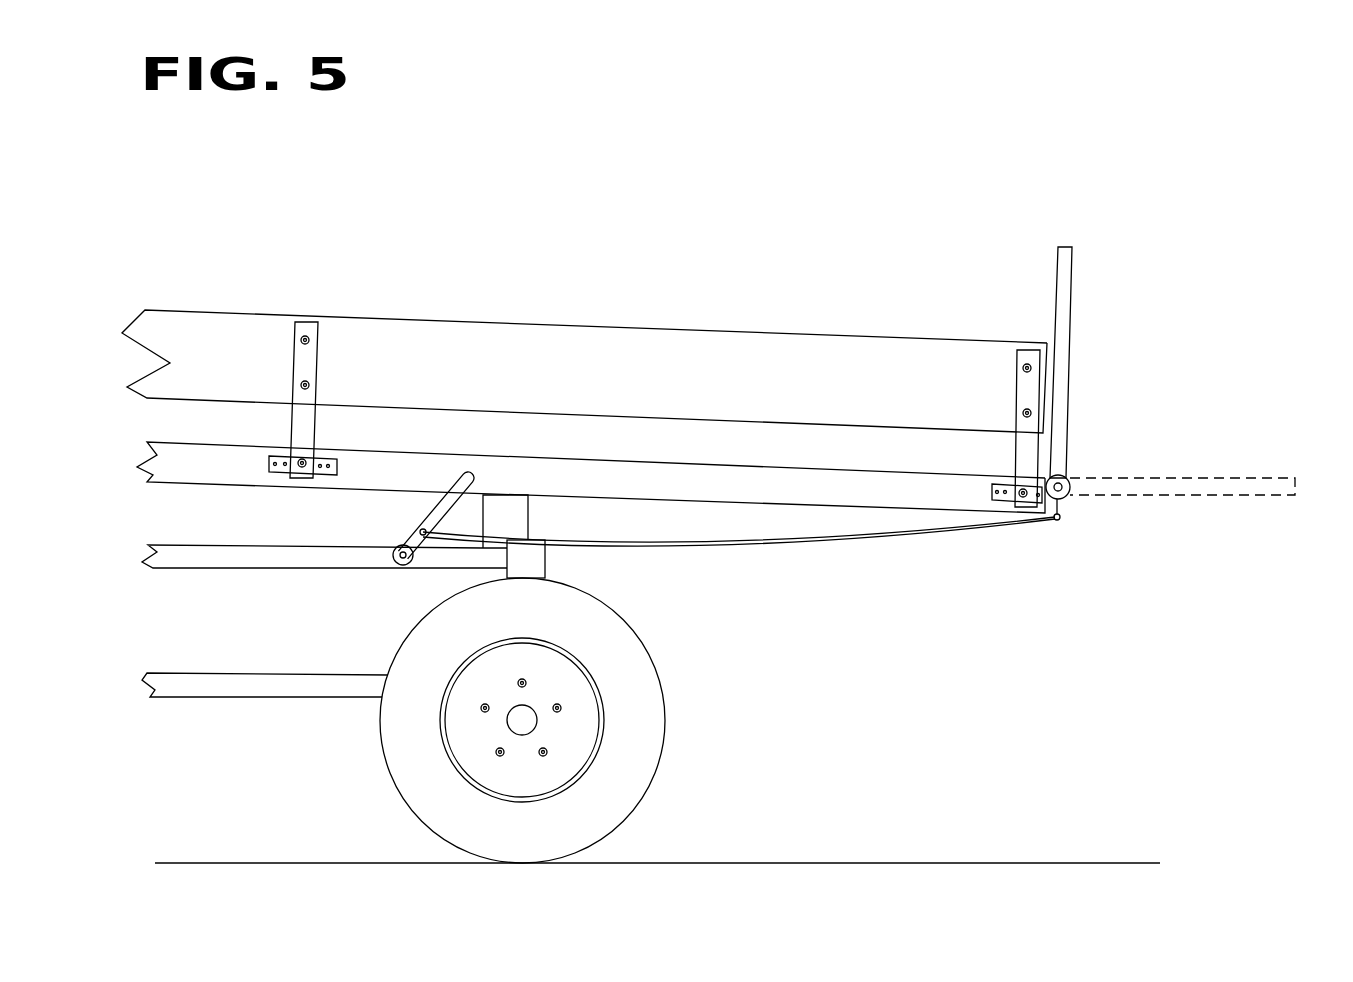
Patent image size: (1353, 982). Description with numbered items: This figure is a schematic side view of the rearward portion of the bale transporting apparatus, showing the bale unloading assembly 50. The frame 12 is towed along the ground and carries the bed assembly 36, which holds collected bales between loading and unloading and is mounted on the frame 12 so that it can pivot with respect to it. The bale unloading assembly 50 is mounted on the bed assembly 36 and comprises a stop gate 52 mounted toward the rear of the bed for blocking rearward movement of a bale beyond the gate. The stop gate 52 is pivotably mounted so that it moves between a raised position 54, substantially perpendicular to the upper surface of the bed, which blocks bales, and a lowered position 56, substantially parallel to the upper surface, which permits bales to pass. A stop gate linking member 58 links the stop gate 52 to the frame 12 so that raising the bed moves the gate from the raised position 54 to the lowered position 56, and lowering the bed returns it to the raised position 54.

The frame 12 is at (302, 688).
The bed assembly 36 is at (655, 317).
The bale unloading assembly 50 is at (1123, 397).
The stop gate 52 is at (1063, 318).
The raised position 54 is at (1070, 217).
The lowered position 56 is at (1238, 470).
The stop gate linking member 58 is at (820, 540).